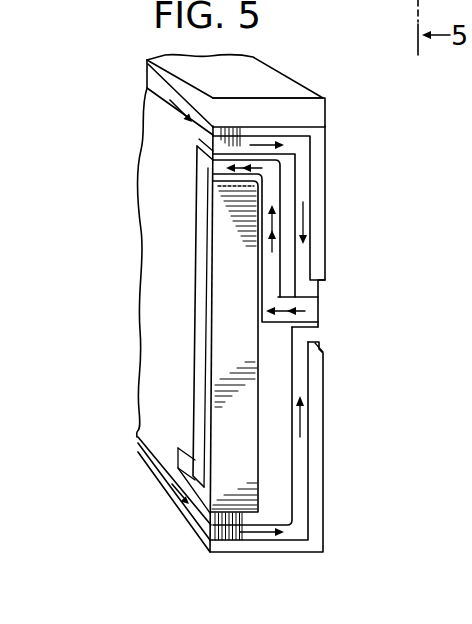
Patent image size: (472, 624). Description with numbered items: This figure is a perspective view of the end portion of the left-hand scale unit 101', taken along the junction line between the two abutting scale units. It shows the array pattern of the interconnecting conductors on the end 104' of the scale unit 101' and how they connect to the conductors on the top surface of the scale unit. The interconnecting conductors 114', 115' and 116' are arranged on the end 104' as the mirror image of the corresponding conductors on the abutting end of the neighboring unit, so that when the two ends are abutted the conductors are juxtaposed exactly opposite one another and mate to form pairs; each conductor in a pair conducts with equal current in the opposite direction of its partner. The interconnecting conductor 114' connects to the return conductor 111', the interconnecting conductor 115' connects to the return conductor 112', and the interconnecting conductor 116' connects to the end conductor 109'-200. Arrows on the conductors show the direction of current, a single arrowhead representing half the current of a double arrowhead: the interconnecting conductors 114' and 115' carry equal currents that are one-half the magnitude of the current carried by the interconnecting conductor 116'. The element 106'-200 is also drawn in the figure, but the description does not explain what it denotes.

The scale unit 101' is at (250, 304).
The end 104' is at (264, 100).
The stack module 106'-200 is at (151, 360).
The end conductor 109'-200 is at (124, 313).
The return conductor 111' is at (151, 97).
The return conductor 112' is at (148, 488).
The interconnecting conductor 114' is at (303, 216).
The interconnecting conductor 115' is at (268, 458).
The interconnecting conductor 116' is at (293, 241).